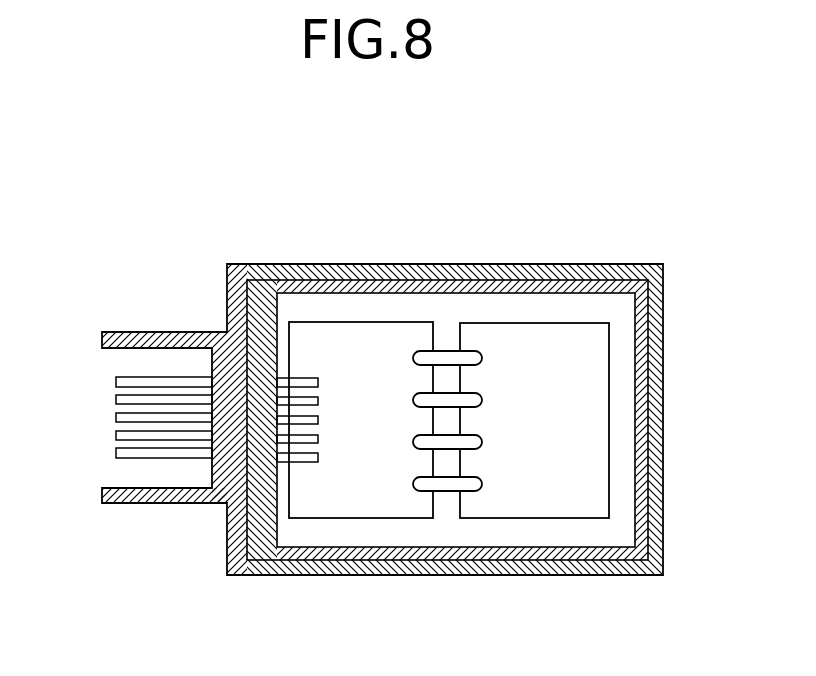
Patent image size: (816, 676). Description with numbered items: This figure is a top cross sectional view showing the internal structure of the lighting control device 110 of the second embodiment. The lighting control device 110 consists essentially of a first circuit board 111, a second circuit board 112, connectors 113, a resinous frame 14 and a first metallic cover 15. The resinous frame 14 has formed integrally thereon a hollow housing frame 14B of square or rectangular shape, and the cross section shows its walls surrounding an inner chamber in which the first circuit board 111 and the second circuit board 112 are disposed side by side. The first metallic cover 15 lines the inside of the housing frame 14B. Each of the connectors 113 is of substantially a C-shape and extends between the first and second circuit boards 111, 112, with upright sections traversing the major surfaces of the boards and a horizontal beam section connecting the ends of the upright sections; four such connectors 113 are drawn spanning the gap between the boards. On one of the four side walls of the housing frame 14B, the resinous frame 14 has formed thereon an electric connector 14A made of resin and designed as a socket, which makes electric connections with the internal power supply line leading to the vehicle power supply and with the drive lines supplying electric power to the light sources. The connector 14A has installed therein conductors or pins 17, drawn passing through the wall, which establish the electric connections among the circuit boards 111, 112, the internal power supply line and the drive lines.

The lighting control device 110 is at (354, 200).
The resinous frame 14 is at (228, 287).
The electric connector 14A is at (147, 503).
The hollow housing frame 14B is at (648, 421).
The first metallic cover 15 is at (598, 268).
The pins 17 is at (116, 399).
The first circuit board 111 is at (363, 510).
The second circuit board 112 is at (538, 510).
The connectors 113 is at (482, 358).